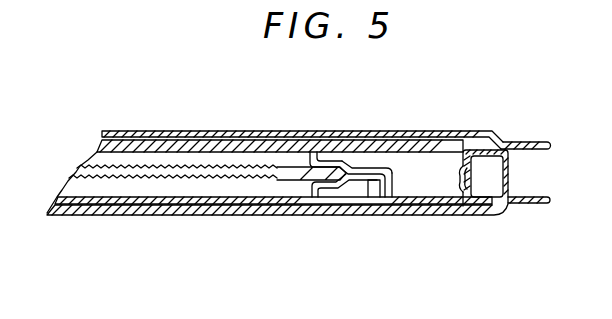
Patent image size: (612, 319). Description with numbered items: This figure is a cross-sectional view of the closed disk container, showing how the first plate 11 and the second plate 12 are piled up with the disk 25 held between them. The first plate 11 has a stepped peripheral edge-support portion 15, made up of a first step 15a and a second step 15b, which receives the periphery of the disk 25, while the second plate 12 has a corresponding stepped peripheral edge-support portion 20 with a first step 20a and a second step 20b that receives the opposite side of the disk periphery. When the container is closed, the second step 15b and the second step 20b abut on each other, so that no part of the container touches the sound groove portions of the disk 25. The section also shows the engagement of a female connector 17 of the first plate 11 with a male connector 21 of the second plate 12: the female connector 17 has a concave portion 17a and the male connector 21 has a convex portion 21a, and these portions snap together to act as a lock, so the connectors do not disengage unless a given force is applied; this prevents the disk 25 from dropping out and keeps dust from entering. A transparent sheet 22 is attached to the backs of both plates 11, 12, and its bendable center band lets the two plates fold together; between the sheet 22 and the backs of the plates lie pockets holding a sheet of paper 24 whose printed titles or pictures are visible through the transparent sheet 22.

The first plate 11 is at (538, 197).
The second plate 12 is at (537, 150).
The peripheral edge-support portion 15 is at (355, 234).
The first step 15a is at (333, 218).
The second step 15b is at (374, 219).
The female connector 17 is at (494, 204).
The concave portion 17a is at (480, 172).
The peripheral edge-support portion 20 is at (350, 125).
The first step 20a is at (322, 131).
The second step 20b is at (367, 144).
The male connector 21 is at (418, 188).
The convex portion 21a is at (462, 172).
The transparent sheet 22 is at (479, 131).
The sheet of paper 24 is at (199, 130).
The disk 25 is at (157, 172).